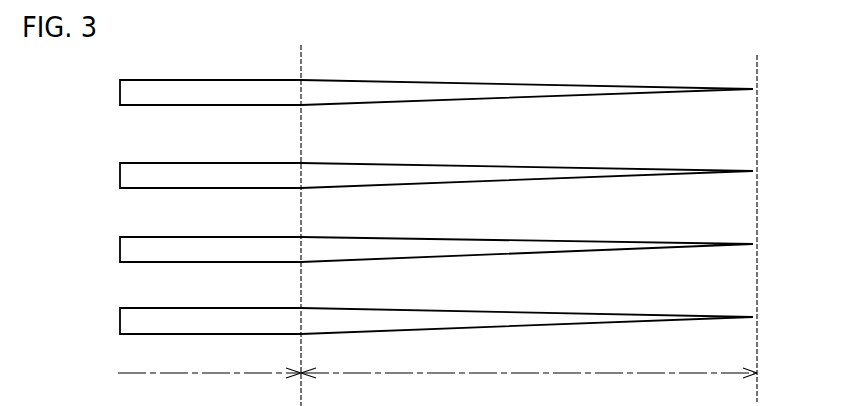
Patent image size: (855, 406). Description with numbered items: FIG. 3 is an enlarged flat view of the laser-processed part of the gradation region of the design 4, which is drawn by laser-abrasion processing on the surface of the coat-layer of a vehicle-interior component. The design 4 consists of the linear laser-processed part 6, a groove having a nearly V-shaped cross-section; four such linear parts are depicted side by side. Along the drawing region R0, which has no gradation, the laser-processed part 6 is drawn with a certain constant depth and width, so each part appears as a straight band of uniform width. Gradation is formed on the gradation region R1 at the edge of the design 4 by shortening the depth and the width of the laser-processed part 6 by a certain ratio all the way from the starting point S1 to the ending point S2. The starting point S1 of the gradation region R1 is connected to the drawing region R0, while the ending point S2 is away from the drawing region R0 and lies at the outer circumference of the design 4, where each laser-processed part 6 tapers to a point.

The design 4 is at (406, 207).
The laser-processed part 6 is at (422, 101).
The starting point S1 is at (306, 74).
The ending point S2 is at (763, 88).
The drawing region R0 is at (209, 360).
The gradation region R1 is at (529, 360).